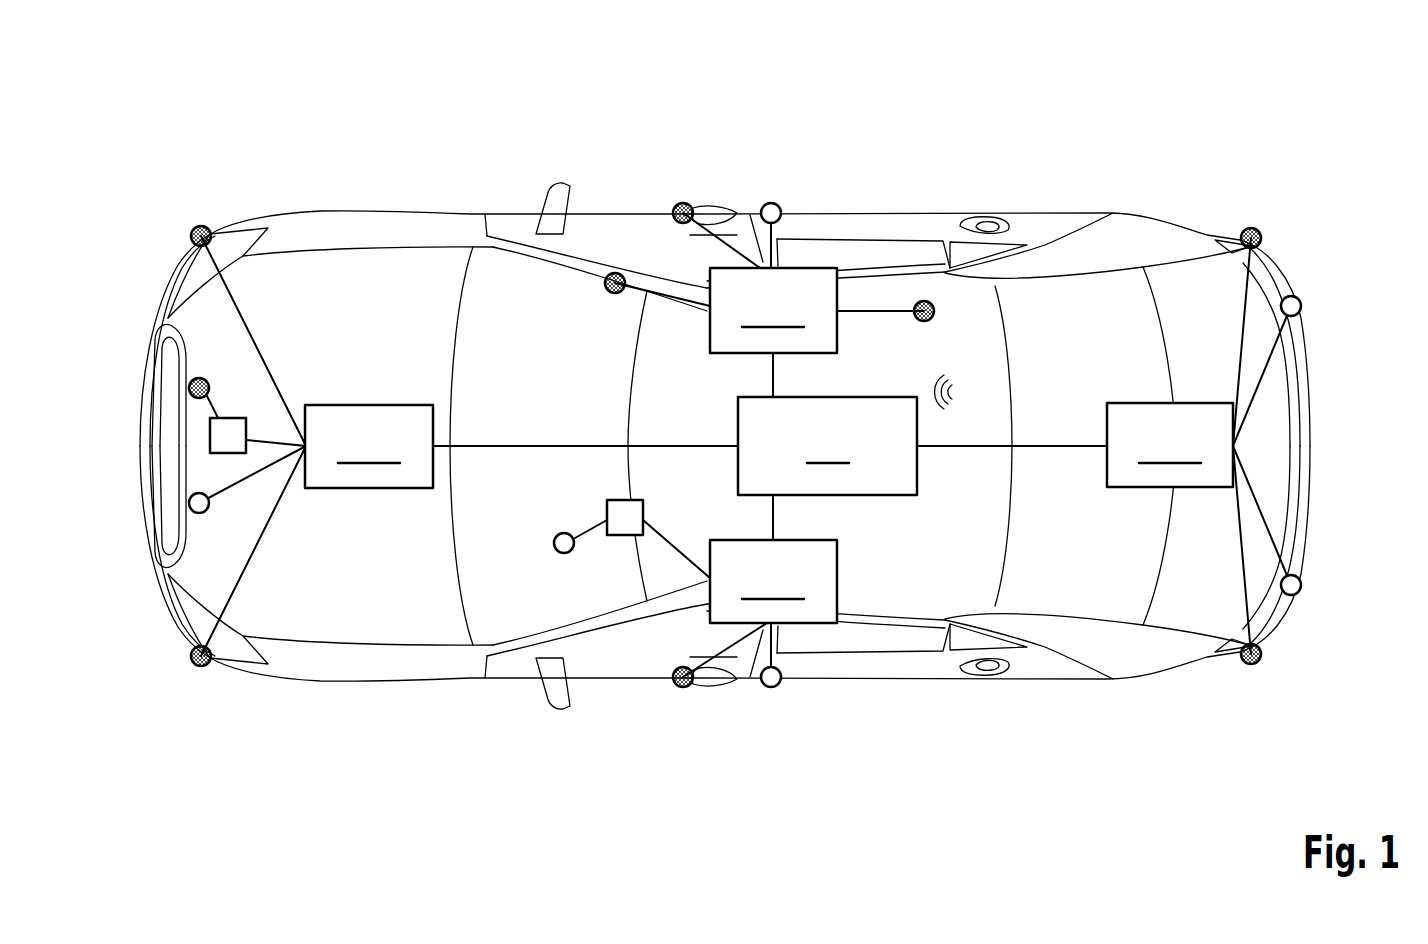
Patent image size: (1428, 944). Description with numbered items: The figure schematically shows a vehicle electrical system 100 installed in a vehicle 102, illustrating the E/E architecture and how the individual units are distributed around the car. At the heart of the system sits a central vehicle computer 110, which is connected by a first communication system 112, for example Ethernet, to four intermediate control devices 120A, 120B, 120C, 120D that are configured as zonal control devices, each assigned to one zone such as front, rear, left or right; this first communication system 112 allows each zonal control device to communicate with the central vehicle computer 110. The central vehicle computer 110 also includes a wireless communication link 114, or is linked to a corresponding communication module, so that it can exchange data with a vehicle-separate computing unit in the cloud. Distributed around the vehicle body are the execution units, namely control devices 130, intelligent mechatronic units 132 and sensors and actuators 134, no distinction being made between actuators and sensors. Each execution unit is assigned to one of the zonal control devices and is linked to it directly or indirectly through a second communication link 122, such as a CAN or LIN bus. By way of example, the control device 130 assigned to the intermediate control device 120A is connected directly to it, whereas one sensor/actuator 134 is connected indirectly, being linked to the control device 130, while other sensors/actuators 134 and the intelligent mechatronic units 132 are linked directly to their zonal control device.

The vehicle electrical system 100 is at (133, 90).
The vehicle 102 is at (343, 209).
The central vehicle computer 110 is at (827, 446).
The first communication system 112 is at (497, 446).
The wireless communication link 114 is at (954, 380).
The intermediate control device 120A is at (381, 488).
The intermediate control device 120B is at (1215, 438).
The intermediate control device 120C is at (820, 553).
The intermediate control device 120D is at (812, 285).
The second communication link 122 is at (256, 340).
The control device 130 is at (210, 436).
The intelligent mechatronic unit 132 is at (189, 503).
The sensor/actuator 134 is at (205, 226).